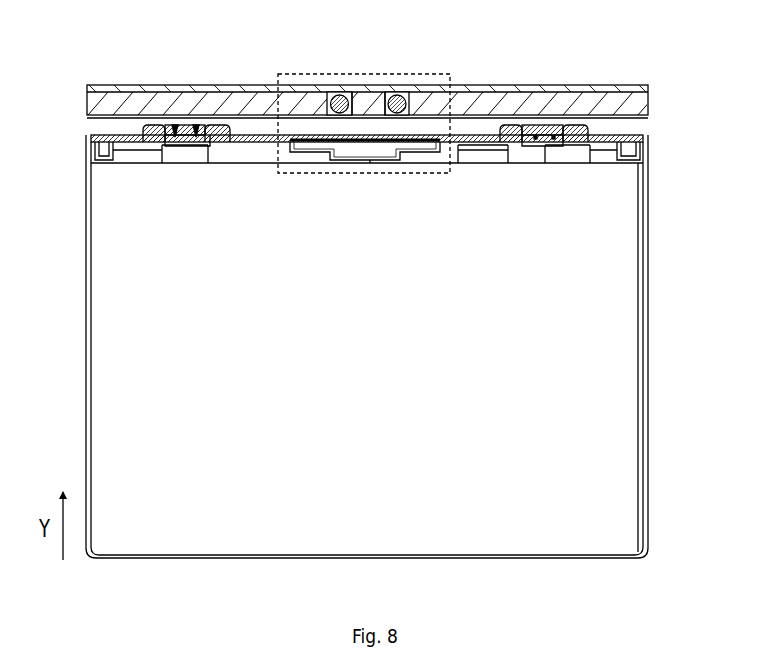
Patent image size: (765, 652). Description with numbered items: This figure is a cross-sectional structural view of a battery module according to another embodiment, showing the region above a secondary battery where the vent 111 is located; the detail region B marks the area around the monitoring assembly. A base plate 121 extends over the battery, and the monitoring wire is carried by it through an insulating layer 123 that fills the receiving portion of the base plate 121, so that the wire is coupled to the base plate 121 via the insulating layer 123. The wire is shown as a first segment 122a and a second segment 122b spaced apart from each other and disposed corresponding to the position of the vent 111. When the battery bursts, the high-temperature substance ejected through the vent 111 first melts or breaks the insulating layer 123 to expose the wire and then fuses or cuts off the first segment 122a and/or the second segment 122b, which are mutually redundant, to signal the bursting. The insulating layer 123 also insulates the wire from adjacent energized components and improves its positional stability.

The vent 111 is at (370, 142).
The base plate 121 is at (152, 91).
The first segment 122a is at (324, 91).
The second segment 122b is at (413, 91).
The insulating layer 123 is at (388, 91).
The detail region B is at (278, 70).